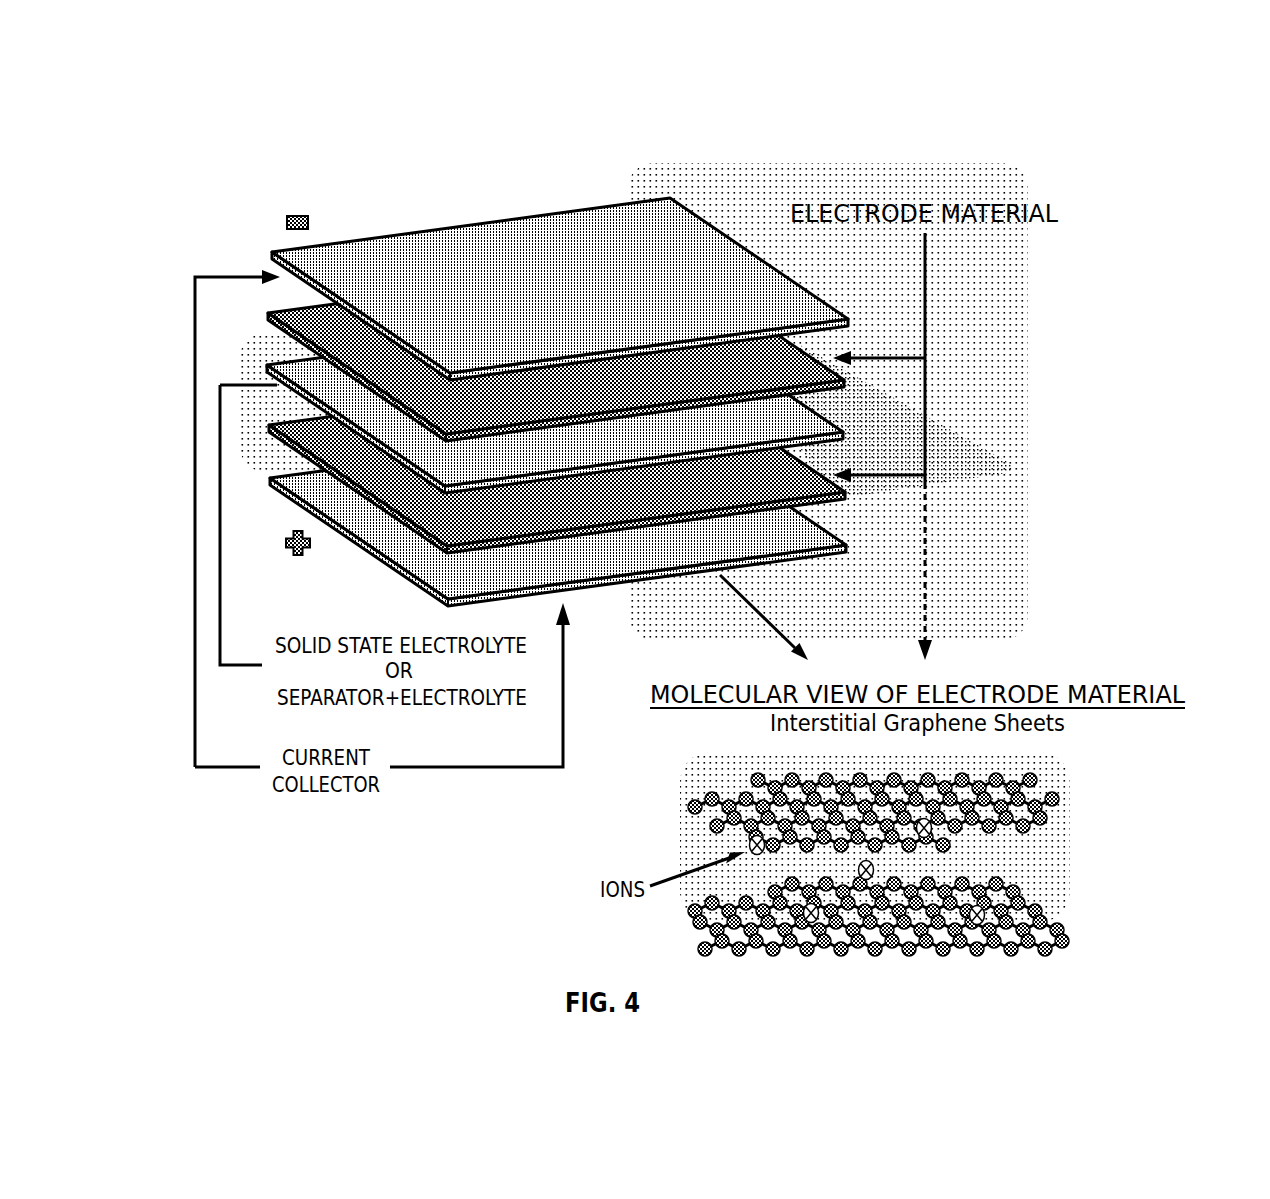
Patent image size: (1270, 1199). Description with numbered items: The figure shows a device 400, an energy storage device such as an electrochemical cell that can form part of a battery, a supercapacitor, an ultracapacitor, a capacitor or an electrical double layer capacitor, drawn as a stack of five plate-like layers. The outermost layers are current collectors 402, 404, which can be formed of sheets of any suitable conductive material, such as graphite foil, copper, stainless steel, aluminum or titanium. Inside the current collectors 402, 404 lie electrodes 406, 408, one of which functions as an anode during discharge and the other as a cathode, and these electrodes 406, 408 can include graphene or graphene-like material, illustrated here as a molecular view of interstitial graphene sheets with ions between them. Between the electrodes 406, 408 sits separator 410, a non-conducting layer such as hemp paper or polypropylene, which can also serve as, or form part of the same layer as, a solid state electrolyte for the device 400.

The device 400 is at (1047, 140).
The current collector 402 is at (514, 220).
The current collector 404 is at (778, 543).
The electrode 406 is at (797, 350).
The electrode 408 is at (778, 485).
The separator 410 is at (792, 422).